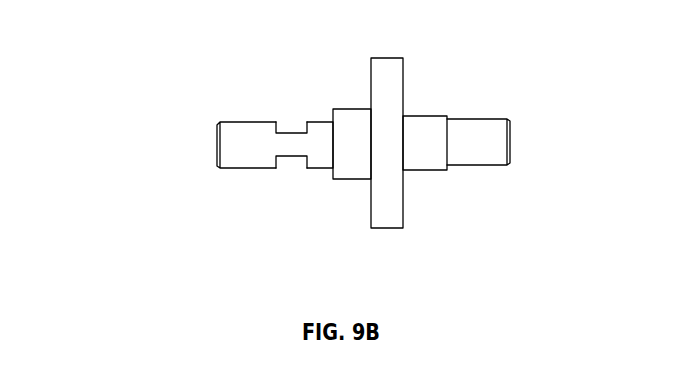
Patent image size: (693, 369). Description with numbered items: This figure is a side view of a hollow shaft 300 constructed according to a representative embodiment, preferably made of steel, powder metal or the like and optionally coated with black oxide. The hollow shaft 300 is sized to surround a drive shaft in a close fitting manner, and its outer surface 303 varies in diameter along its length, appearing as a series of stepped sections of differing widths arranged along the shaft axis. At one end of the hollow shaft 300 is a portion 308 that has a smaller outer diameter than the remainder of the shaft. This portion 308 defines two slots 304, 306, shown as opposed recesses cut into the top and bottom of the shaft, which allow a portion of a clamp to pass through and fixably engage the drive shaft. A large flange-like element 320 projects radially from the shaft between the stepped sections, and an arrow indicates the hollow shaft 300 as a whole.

The hollow shaft 300 is at (370, 132).
The outer surface 303 is at (425, 127).
The slot 304 is at (287, 115).
The slot 306 is at (288, 180).
The portion 308 is at (238, 132).
The flange 320 is at (388, 70).